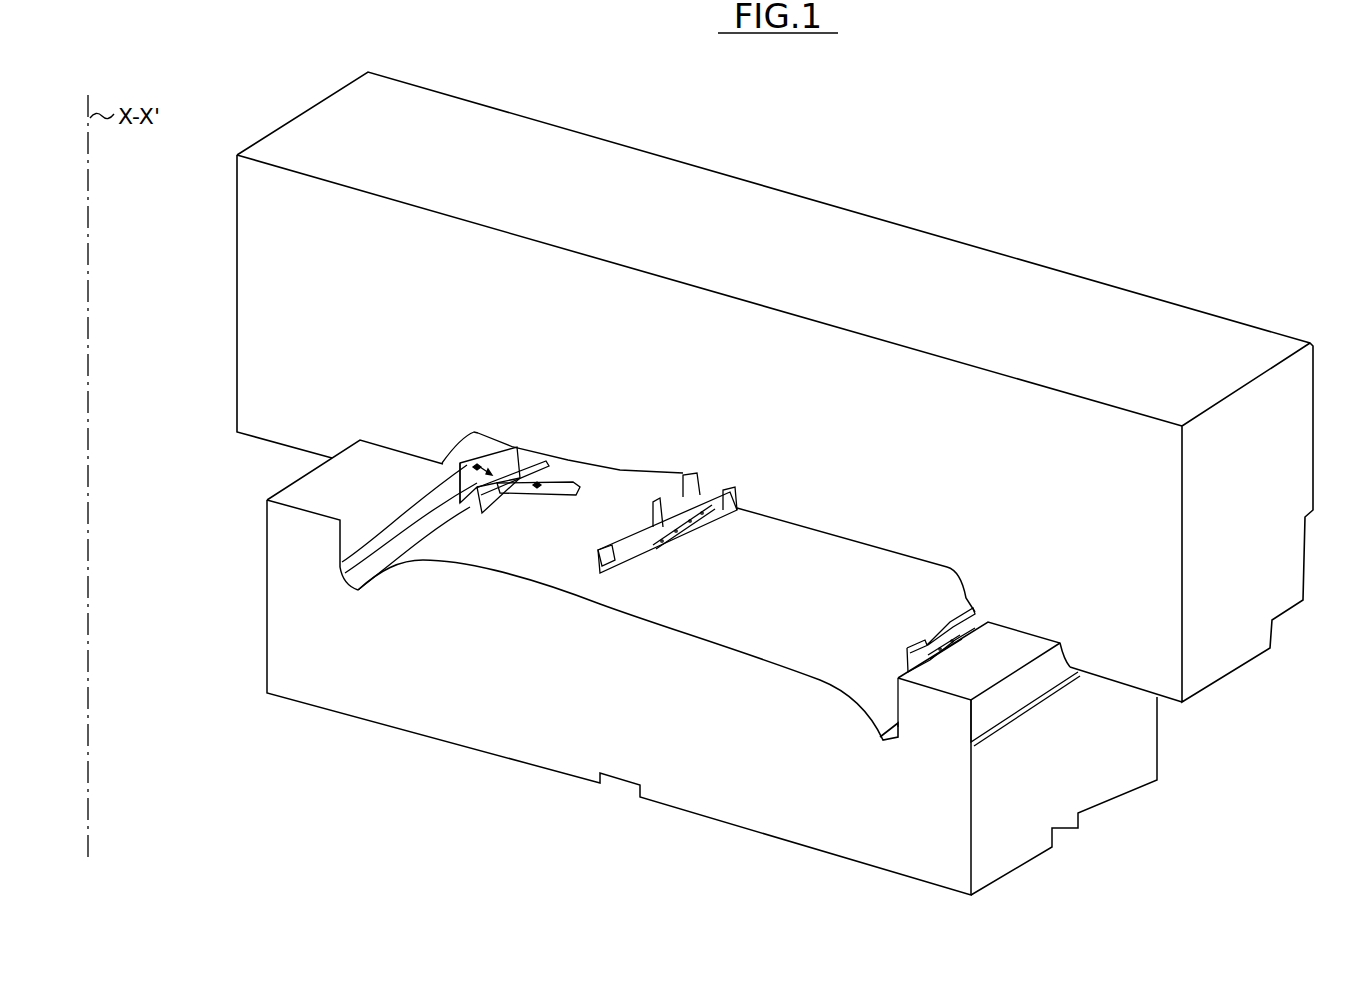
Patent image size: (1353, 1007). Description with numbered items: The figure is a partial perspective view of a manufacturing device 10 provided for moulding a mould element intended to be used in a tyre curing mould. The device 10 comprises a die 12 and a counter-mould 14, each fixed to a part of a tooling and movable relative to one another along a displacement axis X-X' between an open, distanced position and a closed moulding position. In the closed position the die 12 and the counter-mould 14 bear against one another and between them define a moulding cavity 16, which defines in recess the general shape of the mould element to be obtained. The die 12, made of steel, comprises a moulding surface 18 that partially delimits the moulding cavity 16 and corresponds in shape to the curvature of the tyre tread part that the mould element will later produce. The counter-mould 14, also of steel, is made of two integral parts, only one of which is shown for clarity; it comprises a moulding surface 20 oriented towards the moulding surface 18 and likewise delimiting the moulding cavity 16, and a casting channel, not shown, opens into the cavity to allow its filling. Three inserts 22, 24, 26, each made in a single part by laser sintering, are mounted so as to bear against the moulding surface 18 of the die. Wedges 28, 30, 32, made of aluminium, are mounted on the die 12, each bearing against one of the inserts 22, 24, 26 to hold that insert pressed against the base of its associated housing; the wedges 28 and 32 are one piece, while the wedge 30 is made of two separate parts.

The manufacturing device 10 is at (222, 486).
The die 12 is at (430, 720).
The counter-mould 14 is at (826, 224).
The moulding cavity 16 is at (495, 447).
The moulding surface 18 is at (797, 593).
The moulding surface 20 is at (607, 470).
The insert 22 is at (680, 550).
The insert 24 is at (963, 638).
The insert 26 is at (543, 487).
The wedge 28 is at (627, 528).
The wedge 30 is at (927, 627).
The wedge 32 is at (471, 436).